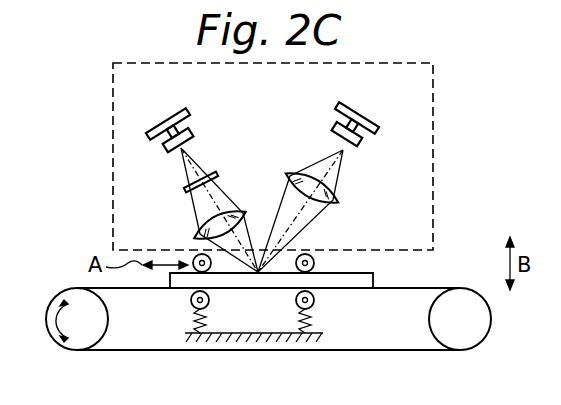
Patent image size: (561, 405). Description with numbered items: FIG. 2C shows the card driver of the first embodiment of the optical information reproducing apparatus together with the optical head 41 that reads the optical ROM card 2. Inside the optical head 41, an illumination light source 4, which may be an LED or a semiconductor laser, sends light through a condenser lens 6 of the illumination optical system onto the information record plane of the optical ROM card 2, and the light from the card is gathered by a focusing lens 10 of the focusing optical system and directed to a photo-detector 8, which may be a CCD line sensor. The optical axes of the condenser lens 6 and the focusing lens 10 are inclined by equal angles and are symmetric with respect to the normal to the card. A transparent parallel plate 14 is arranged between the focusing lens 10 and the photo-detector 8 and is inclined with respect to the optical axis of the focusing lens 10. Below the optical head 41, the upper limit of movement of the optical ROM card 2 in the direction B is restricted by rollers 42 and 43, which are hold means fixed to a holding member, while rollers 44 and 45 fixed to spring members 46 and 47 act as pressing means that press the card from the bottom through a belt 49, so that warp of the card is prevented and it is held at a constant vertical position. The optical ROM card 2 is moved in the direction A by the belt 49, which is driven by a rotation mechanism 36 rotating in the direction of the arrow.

The optical ROM card 2 is at (373, 273).
The illumination light source 4 is at (355, 145).
The condenser lens 6 is at (337, 198).
The photo-detector 8 is at (190, 130).
The focusing lens 10 is at (237, 213).
The transparent parallel plate 14 is at (215, 178).
The rotation mechanism 36 is at (92, 335).
The optical head 41 is at (437, 152).
The roller 42 is at (321, 253).
The roller 43 is at (190, 256).
The roller 44 is at (317, 301).
The roller 45 is at (190, 302).
The spring member 46 is at (309, 328).
The spring member 47 is at (199, 326).
The belt 49 is at (140, 352).